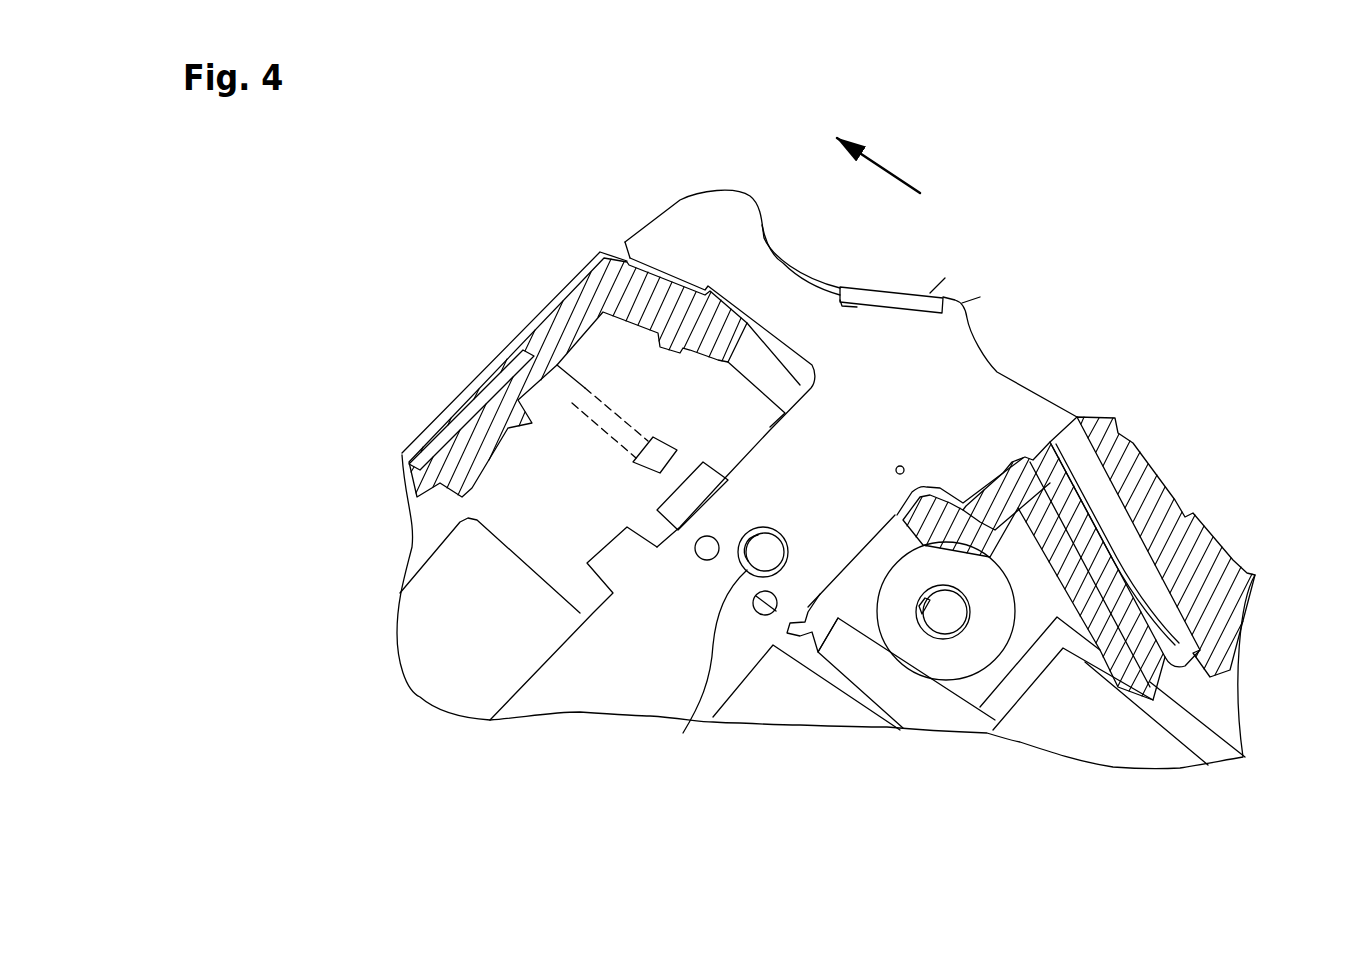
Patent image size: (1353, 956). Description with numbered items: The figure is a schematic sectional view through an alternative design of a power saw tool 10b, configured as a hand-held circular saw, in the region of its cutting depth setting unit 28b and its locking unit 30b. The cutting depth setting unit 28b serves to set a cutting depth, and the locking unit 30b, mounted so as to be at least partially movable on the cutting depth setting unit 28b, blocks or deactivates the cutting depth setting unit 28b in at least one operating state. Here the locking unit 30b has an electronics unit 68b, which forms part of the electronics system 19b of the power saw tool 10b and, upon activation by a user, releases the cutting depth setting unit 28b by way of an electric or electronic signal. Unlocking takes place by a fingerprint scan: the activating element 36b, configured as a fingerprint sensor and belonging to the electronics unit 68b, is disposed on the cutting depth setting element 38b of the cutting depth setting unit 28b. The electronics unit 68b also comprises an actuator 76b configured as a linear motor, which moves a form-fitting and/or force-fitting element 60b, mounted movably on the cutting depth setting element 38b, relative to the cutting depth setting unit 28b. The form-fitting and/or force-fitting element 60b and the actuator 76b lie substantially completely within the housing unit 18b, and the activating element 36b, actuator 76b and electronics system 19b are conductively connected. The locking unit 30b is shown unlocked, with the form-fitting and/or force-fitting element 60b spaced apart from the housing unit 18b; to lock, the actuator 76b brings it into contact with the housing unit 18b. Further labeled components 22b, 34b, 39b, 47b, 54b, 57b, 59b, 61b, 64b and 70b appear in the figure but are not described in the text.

The power saw tool 10b is at (1270, 170).
The housing unit 18b is at (562, 273).
The electronics system 19b is at (1147, 730).
The housing shell 22b is at (1210, 547).
The cutting depth setting unit 28b is at (1057, 200).
The locking unit 30b is at (1140, 263).
The direction 34b is at (920, 193).
The activating element 36b is at (907, 300).
The cutting depth setting element 38b is at (977, 370).
The housing rib 39b is at (927, 702).
The receiving contour 47b is at (683, 733).
The contact surface 54b is at (962, 303).
The stop 57b is at (932, 295).
The joint 59b is at (1025, 155).
The form-fitting and/or force-fitting element 60b is at (653, 467).
The gap 61b is at (1213, 315).
The spring element 64b is at (1000, 510).
The electronics unit 68b is at (1073, 375).
The guide element 70b is at (1047, 280).
The actuator 76b is at (677, 513).